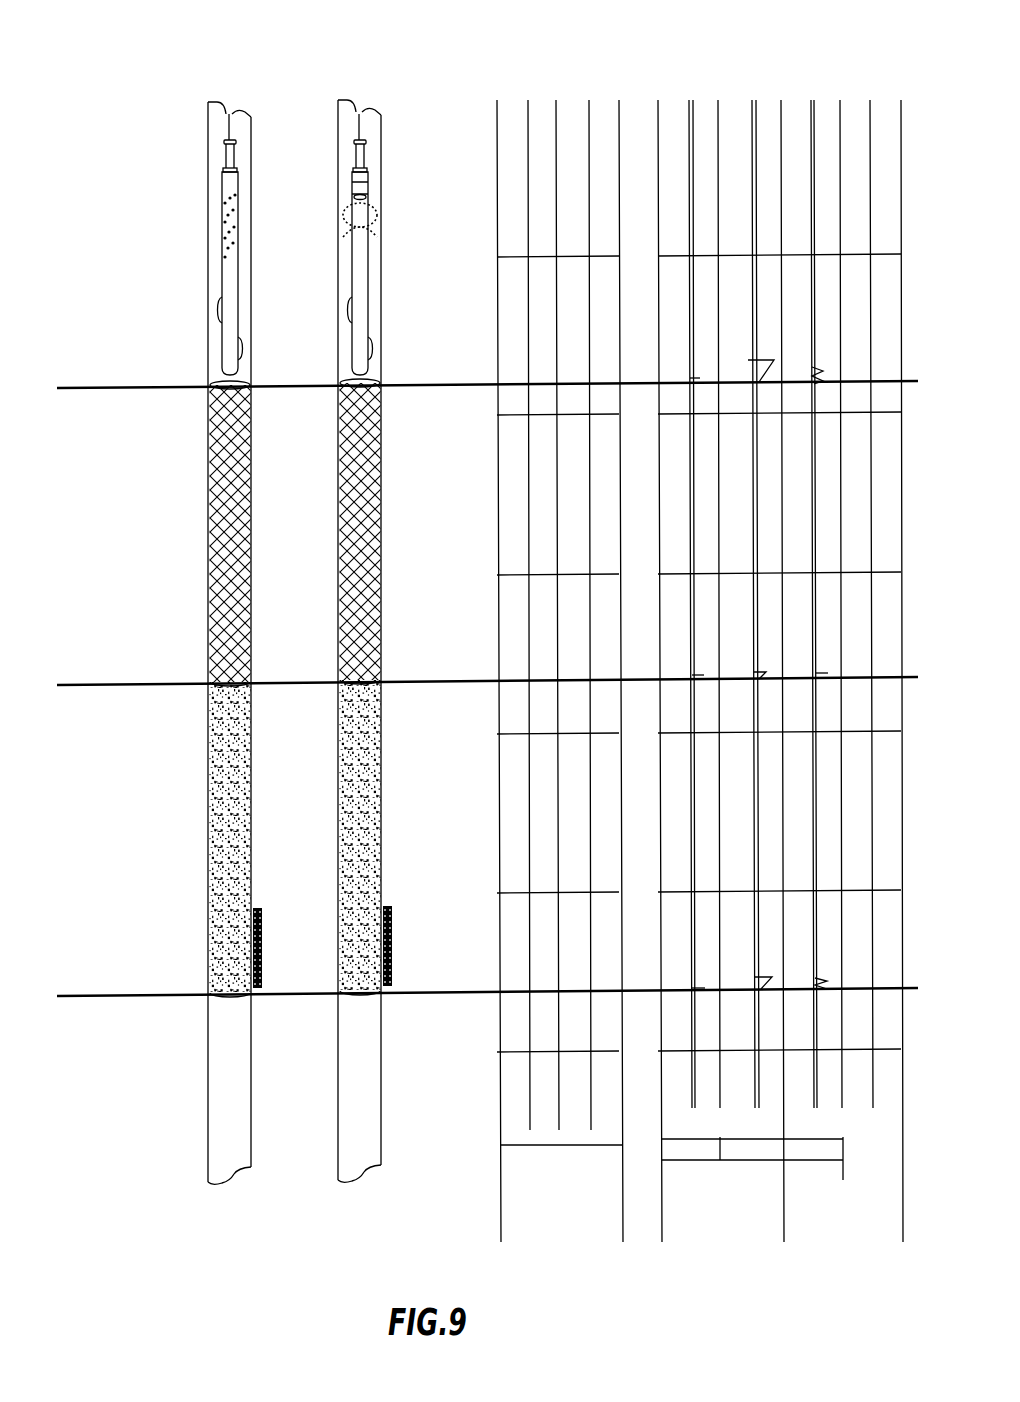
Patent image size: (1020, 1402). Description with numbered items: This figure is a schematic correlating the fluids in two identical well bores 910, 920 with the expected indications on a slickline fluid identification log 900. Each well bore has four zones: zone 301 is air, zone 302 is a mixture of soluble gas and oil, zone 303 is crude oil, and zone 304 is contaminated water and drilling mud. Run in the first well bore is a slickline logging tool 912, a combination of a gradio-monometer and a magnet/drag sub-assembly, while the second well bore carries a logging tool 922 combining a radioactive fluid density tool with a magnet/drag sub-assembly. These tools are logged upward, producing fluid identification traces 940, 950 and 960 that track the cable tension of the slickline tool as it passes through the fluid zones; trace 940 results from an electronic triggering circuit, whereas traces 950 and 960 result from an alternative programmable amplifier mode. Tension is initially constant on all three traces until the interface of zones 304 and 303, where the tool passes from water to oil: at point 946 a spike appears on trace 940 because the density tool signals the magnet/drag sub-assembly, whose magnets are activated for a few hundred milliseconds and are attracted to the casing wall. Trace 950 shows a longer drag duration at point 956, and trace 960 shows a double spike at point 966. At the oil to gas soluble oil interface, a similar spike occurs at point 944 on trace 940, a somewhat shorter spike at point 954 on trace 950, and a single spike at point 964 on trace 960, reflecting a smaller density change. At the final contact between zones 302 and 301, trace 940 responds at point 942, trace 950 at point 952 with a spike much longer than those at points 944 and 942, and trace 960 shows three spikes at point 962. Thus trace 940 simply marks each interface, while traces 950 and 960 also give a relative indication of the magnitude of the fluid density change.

The log 900 is at (745, 1275).
The well bore 910 is at (227, 113).
The slickline logging tool 912 is at (230, 276).
The well bore 920 is at (348, 102).
The logging tool 922 is at (360, 268).
The tension trace 940 is at (693, 108).
The point 942 is at (697, 378).
The point 944 is at (698, 673).
The point 946 is at (698, 987).
The tension trace 950 is at (757, 115).
The point 952 is at (767, 358).
The point 954 is at (761, 672).
The point 956 is at (763, 977).
The tension trace 960 is at (815, 108).
The point 962 is at (818, 367).
The point 964 is at (826, 673).
The point 966 is at (820, 978).
The zone 301 is at (487, 339).
The zone 302 is at (487, 587).
The zone 303 is at (487, 888).
The zone 304 is at (445, 1054).